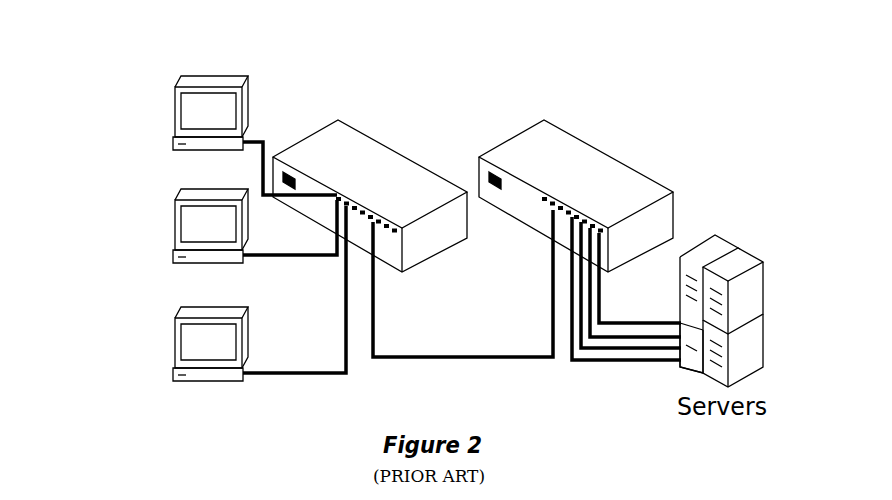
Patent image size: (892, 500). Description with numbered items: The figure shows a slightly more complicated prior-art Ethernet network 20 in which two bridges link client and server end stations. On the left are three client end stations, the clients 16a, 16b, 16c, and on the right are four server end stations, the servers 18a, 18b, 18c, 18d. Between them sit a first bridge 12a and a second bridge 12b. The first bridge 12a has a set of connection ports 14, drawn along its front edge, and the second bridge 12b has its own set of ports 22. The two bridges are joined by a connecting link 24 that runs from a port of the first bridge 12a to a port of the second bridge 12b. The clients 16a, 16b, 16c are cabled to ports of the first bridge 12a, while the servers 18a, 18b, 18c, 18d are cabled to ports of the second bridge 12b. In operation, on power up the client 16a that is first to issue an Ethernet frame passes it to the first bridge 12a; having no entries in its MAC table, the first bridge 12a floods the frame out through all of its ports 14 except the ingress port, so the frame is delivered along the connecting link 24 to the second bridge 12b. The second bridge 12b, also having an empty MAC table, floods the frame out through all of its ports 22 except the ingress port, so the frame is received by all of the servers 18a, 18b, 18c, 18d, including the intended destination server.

The network 20 is at (92, 63).
The client 16a is at (155, 100).
The client 16b is at (155, 215).
The client 16c is at (155, 329).
The first bridge 12a is at (377, 138).
The second bridge 12b is at (604, 146).
The connection ports 14 is at (397, 213).
The ports 22 is at (603, 214).
The connecting link 24 is at (475, 358).
The server 18a is at (677, 248).
The server 18b is at (752, 242).
The server 18c is at (688, 370).
The server 18d is at (770, 355).